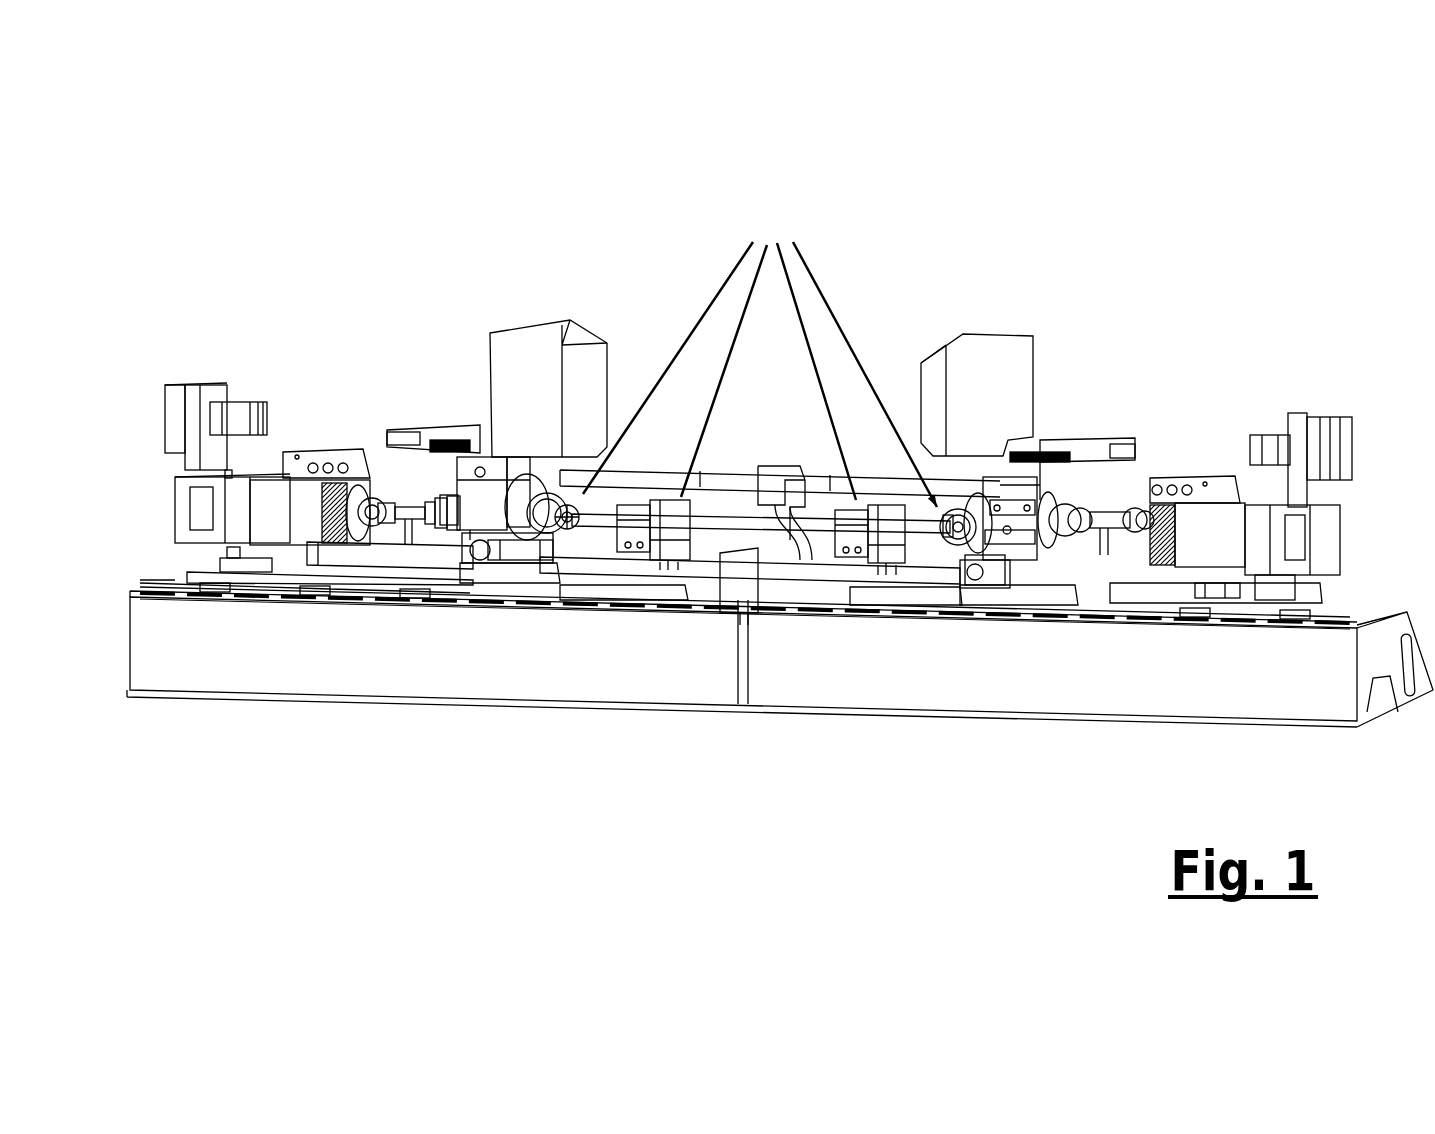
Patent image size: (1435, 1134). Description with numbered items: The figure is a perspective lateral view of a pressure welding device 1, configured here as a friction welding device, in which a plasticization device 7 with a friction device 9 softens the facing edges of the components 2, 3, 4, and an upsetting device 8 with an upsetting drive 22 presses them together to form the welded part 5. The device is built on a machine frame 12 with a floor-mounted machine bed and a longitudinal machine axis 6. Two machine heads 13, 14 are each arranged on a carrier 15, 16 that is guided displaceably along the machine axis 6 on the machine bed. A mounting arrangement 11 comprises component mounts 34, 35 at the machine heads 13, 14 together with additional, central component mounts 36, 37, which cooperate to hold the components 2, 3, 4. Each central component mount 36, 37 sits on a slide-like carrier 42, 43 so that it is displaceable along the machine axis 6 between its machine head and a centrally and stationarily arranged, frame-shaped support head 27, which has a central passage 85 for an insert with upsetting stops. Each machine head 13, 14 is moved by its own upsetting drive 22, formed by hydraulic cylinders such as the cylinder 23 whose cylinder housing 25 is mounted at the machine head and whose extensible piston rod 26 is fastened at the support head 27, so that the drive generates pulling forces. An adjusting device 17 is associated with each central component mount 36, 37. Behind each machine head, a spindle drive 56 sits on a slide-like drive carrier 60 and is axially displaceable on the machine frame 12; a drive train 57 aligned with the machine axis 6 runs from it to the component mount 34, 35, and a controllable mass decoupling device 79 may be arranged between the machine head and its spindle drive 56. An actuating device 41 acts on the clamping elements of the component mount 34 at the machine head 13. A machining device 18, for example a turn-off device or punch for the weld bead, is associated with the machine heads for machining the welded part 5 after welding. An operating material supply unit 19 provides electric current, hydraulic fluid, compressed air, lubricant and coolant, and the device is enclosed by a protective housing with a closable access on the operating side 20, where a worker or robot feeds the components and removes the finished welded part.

The pressure welding device 1 is at (1017, 295).
The component 2 is at (578, 497).
The component 3 is at (737, 517).
The component 4 is at (948, 530).
The welded part 5 is at (708, 530).
The machine axis 6 is at (1233, 530).
The plasticization device 7 is at (646, 370).
The upsetting device 8 is at (745, 680).
The friction device 9 is at (620, 407).
The mounting arrangement 11 is at (760, 358).
The machine frame 12 is at (692, 678).
The machine head 13 is at (710, 517).
The machine head 14 is at (1021, 458).
The carrier 15 is at (428, 587).
The carrier 16 is at (1055, 613).
The adjusting device 17 is at (500, 615).
The machining device 18 is at (595, 377).
The operating material supply unit 19 is at (165, 498).
The operating side 20 is at (508, 677).
The upsetting drive 22 is at (1013, 635).
The cylinder 23 is at (350, 552).
The cylinder housing 25 is at (370, 590).
The piston rod 26 is at (828, 480).
The support head 27 is at (777, 468).
The component mount 34 is at (550, 553).
The component mount 35 is at (948, 550).
The additional component mount 36 is at (663, 500).
The additional component mount 37 is at (852, 487).
The actuating device 41 is at (407, 510).
The carrier 42 is at (600, 607).
The carrier 43 is at (885, 590).
The spindle drive 56 is at (287, 517).
The drive train 57 is at (1120, 510).
The drive carrier 60 is at (233, 587).
The mass decoupling device 79 is at (1220, 587).
The central passage 85 is at (790, 565).